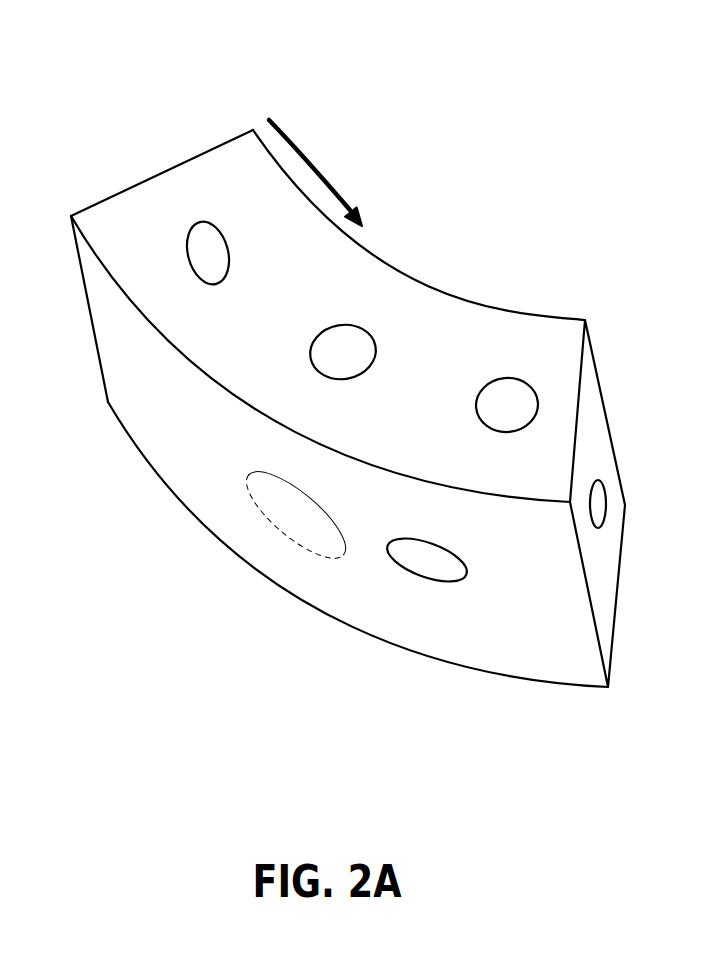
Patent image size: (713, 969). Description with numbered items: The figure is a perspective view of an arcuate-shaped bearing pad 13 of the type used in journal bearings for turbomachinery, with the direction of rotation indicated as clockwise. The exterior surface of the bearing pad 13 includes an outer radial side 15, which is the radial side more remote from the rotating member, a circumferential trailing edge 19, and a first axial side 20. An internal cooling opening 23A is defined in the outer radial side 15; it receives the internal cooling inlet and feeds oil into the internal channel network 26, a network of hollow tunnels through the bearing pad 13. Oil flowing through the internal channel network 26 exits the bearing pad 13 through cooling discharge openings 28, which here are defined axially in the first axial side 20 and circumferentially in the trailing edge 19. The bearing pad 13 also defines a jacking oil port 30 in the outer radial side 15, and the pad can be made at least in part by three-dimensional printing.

The bearing pad 13 is at (382, 404).
The outer radial side 15 is at (170, 450).
The circumferential trailing edge 19 is at (589, 397).
The first axial side 20 is at (517, 332).
The internal cooling opening 23A is at (433, 583).
The internal channel network 26 is at (456, 574).
The cooling discharge opening 28 is at (503, 402).
The jacking oil port 30 is at (295, 520).